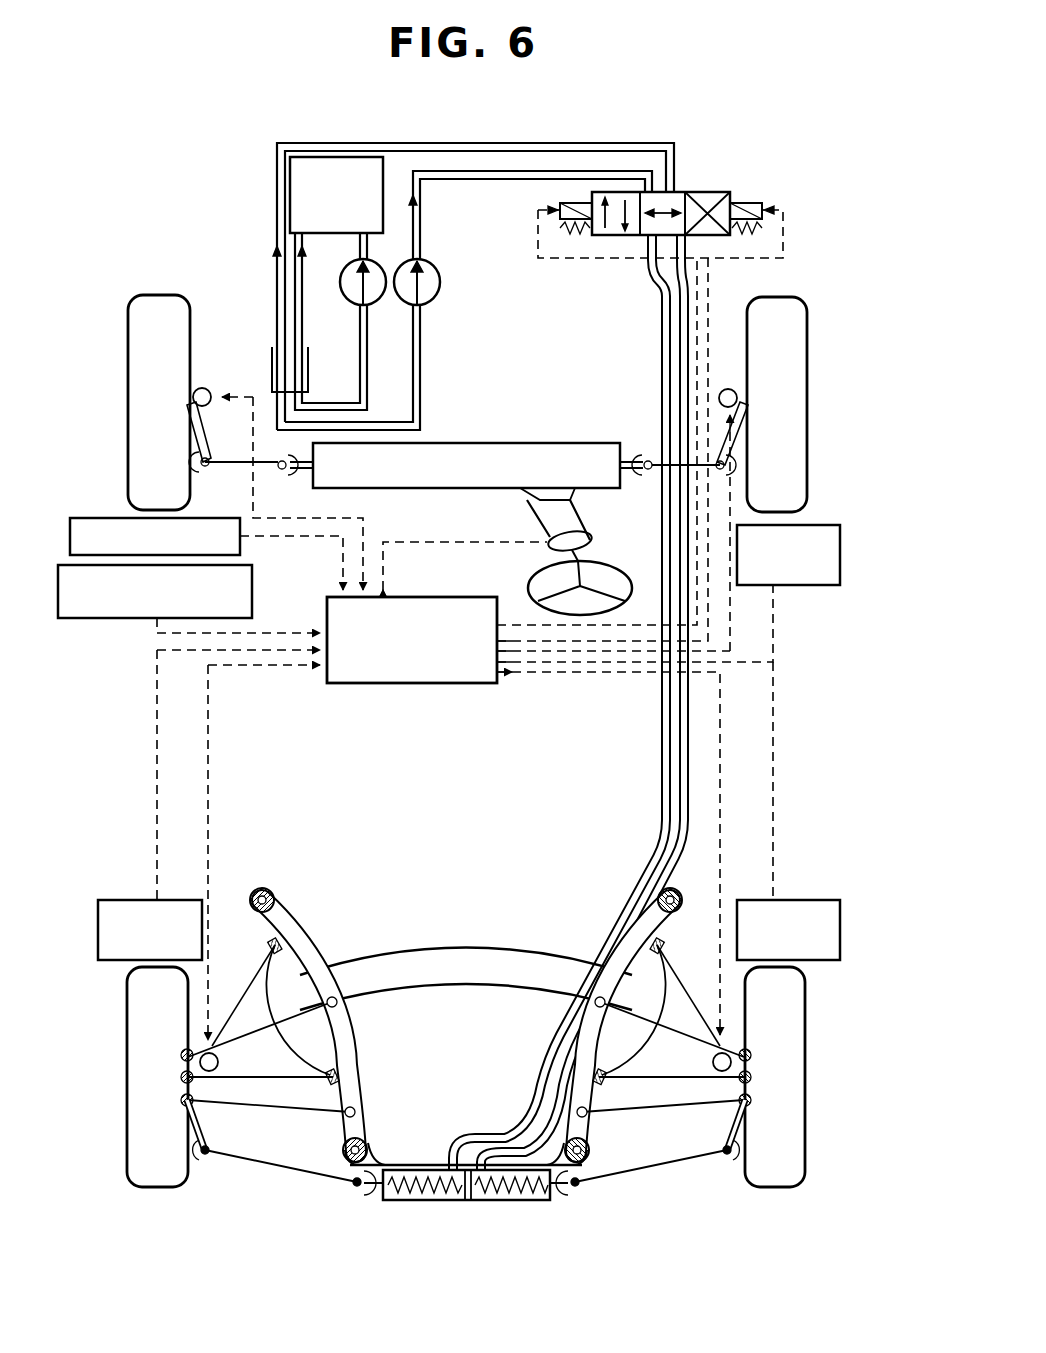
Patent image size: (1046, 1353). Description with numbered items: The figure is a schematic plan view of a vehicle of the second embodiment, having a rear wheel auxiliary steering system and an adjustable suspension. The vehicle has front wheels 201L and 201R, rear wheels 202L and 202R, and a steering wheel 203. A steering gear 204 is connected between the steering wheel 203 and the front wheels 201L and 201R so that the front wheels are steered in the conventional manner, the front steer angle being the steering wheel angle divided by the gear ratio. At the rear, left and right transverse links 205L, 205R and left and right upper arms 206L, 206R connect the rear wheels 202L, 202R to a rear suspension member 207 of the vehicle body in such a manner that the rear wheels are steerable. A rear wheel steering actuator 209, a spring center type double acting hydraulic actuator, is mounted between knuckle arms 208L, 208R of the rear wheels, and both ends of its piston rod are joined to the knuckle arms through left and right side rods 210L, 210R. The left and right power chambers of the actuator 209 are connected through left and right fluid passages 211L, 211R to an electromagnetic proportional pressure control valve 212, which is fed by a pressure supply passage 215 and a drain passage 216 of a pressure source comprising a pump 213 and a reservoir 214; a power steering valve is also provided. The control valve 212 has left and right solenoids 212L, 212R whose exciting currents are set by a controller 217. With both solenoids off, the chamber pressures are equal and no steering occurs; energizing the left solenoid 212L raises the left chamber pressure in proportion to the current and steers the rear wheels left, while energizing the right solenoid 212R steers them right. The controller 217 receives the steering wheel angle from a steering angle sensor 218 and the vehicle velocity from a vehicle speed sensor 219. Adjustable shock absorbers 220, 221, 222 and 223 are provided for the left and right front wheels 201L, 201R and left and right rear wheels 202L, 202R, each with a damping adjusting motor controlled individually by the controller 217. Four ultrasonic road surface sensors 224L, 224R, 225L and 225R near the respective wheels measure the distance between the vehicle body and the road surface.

The left front wheel 201L is at (128, 386).
The right front wheel 201R is at (807, 318).
The left rear wheel 202L is at (136, 1190).
The right rear wheel 202R is at (805, 1163).
The steering wheel 203 is at (597, 615).
The steering gear 204 is at (470, 443).
The left transverse link 205L is at (248, 998).
The right transverse link 205R is at (700, 906).
The left upper arm 206L is at (340, 1085).
The right upper arm 206R is at (640, 1090).
The rear suspension member 207 is at (505, 946).
The left knuckle arm 208L is at (215, 1132).
The right knuckle arm 208R is at (717, 1128).
The rear wheel steering actuator 209 is at (484, 1200).
The left side rod 210L is at (300, 1172).
The right side rod 210R is at (712, 1175).
The left fluid passage 211L is at (662, 776).
The right fluid passage 211R is at (690, 786).
The electromagnetic proportional pressure control valve 212 is at (712, 186).
The left solenoid 212L is at (563, 199).
The right solenoid 212R is at (745, 203).
The pump 213 is at (441, 284).
The reservoir 214 is at (272, 350).
The pressure supply passage 215 is at (458, 181).
The drain passage 216 is at (455, 143).
The controller 217 is at (393, 683).
The steering angle sensor 218 is at (591, 534).
The vehicle speed sensor 219 is at (95, 618).
The adjustable shock absorber 220 is at (203, 388).
The adjustable shock absorber 221 is at (737, 398).
The adjustable shock absorber 222 is at (185, 1074).
The adjustable shock absorber 223 is at (748, 1062).
The road surface sensor 224L is at (93, 518).
The road surface sensor 224R is at (830, 525).
The road surface sensor 225L is at (125, 900).
The road surface sensor 225R is at (840, 938).